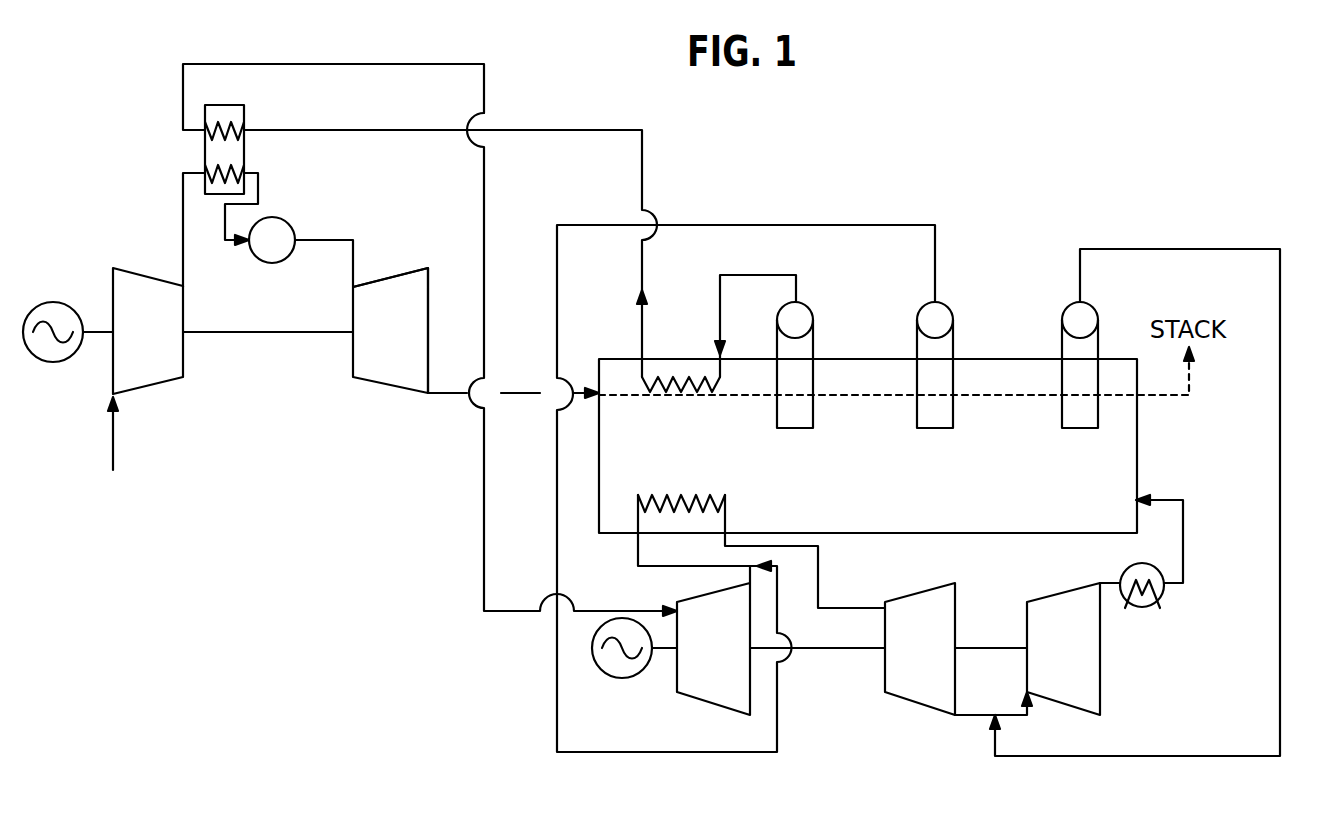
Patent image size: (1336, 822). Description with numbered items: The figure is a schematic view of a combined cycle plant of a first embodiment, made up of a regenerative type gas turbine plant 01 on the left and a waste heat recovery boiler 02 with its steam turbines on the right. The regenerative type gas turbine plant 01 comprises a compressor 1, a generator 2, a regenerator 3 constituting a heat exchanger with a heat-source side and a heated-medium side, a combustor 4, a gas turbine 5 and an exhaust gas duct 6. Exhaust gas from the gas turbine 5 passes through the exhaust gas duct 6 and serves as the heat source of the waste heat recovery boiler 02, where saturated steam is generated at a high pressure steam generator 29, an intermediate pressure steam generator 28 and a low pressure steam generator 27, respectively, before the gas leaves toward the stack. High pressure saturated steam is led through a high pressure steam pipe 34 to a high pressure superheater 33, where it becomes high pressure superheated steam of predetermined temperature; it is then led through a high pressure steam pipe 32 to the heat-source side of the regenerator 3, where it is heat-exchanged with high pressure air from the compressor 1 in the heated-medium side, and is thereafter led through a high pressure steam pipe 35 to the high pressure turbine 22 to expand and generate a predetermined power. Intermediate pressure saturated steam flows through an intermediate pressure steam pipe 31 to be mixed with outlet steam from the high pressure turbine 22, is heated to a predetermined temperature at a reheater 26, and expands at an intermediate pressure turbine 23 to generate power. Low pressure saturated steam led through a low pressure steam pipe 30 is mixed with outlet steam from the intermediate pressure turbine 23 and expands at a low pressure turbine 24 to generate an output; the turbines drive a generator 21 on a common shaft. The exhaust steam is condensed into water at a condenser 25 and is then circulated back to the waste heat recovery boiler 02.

The regenerative type gas turbine plant 01 is at (236, 442).
The waste heat recovery boiler 02 is at (985, 264).
The compressor 1 is at (112, 384).
The generator 2 is at (53, 302).
The regenerator 3 is at (244, 110).
The combustor 4 is at (281, 218).
The gas turbine 5 is at (356, 286).
The exhaust gas duct 6 is at (508, 396).
The generator 21 is at (608, 620).
The high pressure turbine 22 is at (677, 692).
The intermediate pressure turbine 23 is at (885, 692).
The low pressure turbine 24 is at (1100, 690).
The condenser 25 is at (1142, 605).
The reheater 26 is at (725, 496).
The low pressure steam generator 27 is at (1076, 302).
The intermediate pressure steam generator 28 is at (917, 345).
The high pressure steam generator 29 is at (813, 310).
The low pressure steam pipe 30 is at (1280, 249).
The intermediate pressure steam pipe 31 is at (695, 227).
The high pressure steam pipe 32 is at (648, 131).
The high pressure superheater 33 is at (678, 359).
The high pressure steam pipe 34 is at (765, 275).
The high pressure steam pipe 35 is at (487, 157).